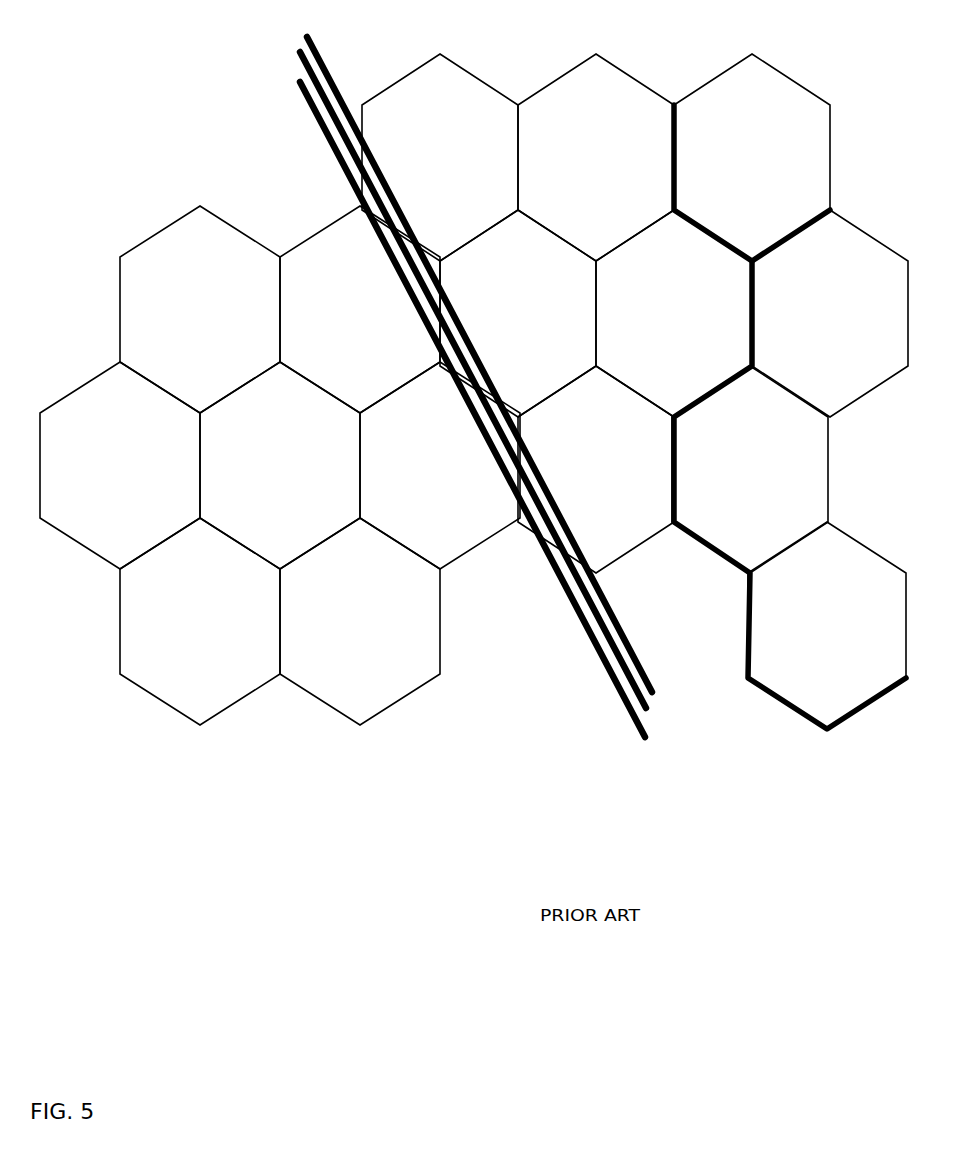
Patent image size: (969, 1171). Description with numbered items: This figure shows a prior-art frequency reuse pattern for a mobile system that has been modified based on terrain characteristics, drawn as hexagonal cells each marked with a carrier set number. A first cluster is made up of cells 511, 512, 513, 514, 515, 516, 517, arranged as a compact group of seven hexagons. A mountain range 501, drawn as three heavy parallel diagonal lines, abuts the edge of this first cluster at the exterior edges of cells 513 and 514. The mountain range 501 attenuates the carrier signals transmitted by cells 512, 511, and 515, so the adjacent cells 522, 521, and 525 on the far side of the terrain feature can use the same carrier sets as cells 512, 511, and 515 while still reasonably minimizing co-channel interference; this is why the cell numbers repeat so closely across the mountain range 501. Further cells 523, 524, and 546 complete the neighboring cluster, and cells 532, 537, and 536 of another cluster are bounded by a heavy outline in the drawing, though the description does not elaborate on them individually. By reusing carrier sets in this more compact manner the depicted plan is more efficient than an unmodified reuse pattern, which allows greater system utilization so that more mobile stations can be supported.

The mountain range 501 is at (637, 752).
The cell 511 is at (265, 551).
The cell 512 is at (185, 393).
The cell 513 is at (345, 393).
The cell 514 is at (420, 551).
The cell 515 is at (342, 703).
The cell 516 is at (183, 703).
The cell 517 is at (105, 551).
The cell 521 is at (495, 396).
The cell 522 is at (423, 236).
The cell 3 of second cluster 523 is at (580, 236).
The cell 4 of second cluster 524 is at (655, 401).
The cell 525 is at (582, 553).
The cell 6 of second cluster 546 is at (735, 240).
The cell 2 of third cluster 532 is at (815, 410).
The cell 6 of third cluster 536 is at (811, 703).
The cell 7 of third cluster 537 is at (738, 555).